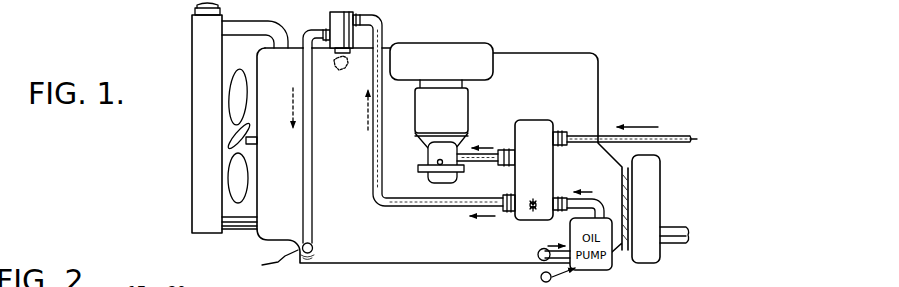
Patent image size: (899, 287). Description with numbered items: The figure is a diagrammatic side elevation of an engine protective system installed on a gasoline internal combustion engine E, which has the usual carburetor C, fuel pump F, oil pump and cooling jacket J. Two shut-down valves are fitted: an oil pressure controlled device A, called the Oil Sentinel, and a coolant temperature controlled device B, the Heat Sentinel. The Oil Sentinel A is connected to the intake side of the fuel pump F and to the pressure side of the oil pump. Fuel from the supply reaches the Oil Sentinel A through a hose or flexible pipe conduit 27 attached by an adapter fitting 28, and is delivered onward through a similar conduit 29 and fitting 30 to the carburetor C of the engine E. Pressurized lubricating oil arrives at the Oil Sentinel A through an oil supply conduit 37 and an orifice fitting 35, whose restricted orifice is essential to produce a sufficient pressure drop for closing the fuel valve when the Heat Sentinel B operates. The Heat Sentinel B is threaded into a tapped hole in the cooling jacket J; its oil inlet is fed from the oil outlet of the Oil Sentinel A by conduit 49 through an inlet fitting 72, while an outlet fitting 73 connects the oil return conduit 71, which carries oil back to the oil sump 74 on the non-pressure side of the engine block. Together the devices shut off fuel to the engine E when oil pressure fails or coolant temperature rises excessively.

The cooling jacket J is at (295, 57).
The internal combustion engine E is at (312, 151).
The coolant temperature controlled shut-down device B is at (350, 42).
The carburetor C is at (461, 101).
The fuel pump F is at (426, 153).
The oil pressure controlled shut-down device A is at (547, 170).
The oil return conduit 71 is at (314, 90).
The inlet fitting 72 is at (362, 17).
The outlet fitting 73 is at (323, 30).
The oil sump 74 is at (325, 253).
The oil supply conduit 49 is at (397, 200).
The fuel conduit 29 is at (467, 168).
The fitting 30 is at (504, 166).
The adapter fitting 28 is at (558, 132).
The fuel supply conduit 27 is at (673, 135).
The orifice fitting 35 is at (556, 198).
The oil supply conduit 37 is at (594, 213).